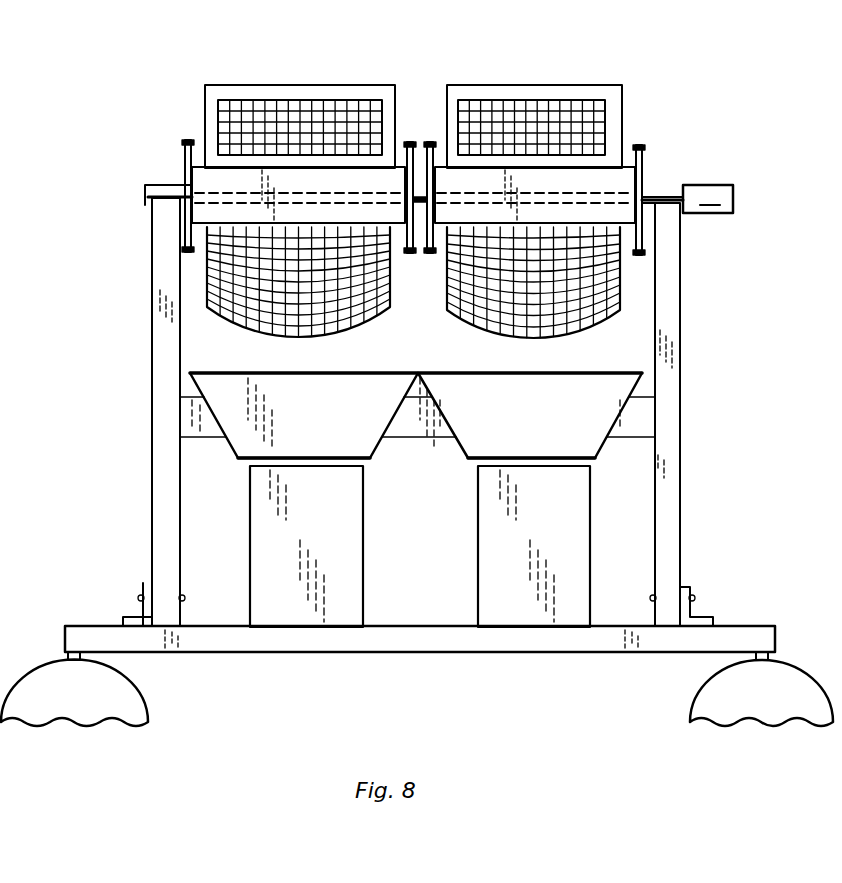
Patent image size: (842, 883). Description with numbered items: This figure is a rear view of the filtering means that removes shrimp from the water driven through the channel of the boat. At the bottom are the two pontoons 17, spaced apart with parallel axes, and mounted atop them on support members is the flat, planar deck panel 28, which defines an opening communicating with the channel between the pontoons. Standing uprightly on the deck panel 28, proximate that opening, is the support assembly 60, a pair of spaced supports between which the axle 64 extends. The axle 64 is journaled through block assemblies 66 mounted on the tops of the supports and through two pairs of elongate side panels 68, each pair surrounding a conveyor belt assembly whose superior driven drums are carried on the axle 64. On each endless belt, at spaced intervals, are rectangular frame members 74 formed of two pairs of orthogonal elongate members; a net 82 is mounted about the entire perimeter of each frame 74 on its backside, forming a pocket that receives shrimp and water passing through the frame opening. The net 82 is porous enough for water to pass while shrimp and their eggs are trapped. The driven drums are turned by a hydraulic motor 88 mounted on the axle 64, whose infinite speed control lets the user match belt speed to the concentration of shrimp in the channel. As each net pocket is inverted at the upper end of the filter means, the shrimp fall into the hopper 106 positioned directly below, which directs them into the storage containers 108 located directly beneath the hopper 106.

The pontoons 17 is at (132, 705).
The deck panel 28 is at (90, 622).
The support assembly 60 is at (150, 320).
The axle 64 is at (238, 192).
The block assemblies 66 is at (148, 187).
The side panels 68 is at (182, 140).
The frame members 74 is at (331, 85).
The net 82 is at (262, 100).
The hydraulic motor 88 is at (702, 215).
The hopper 106 is at (271, 412).
The storage containers 108 is at (280, 537).